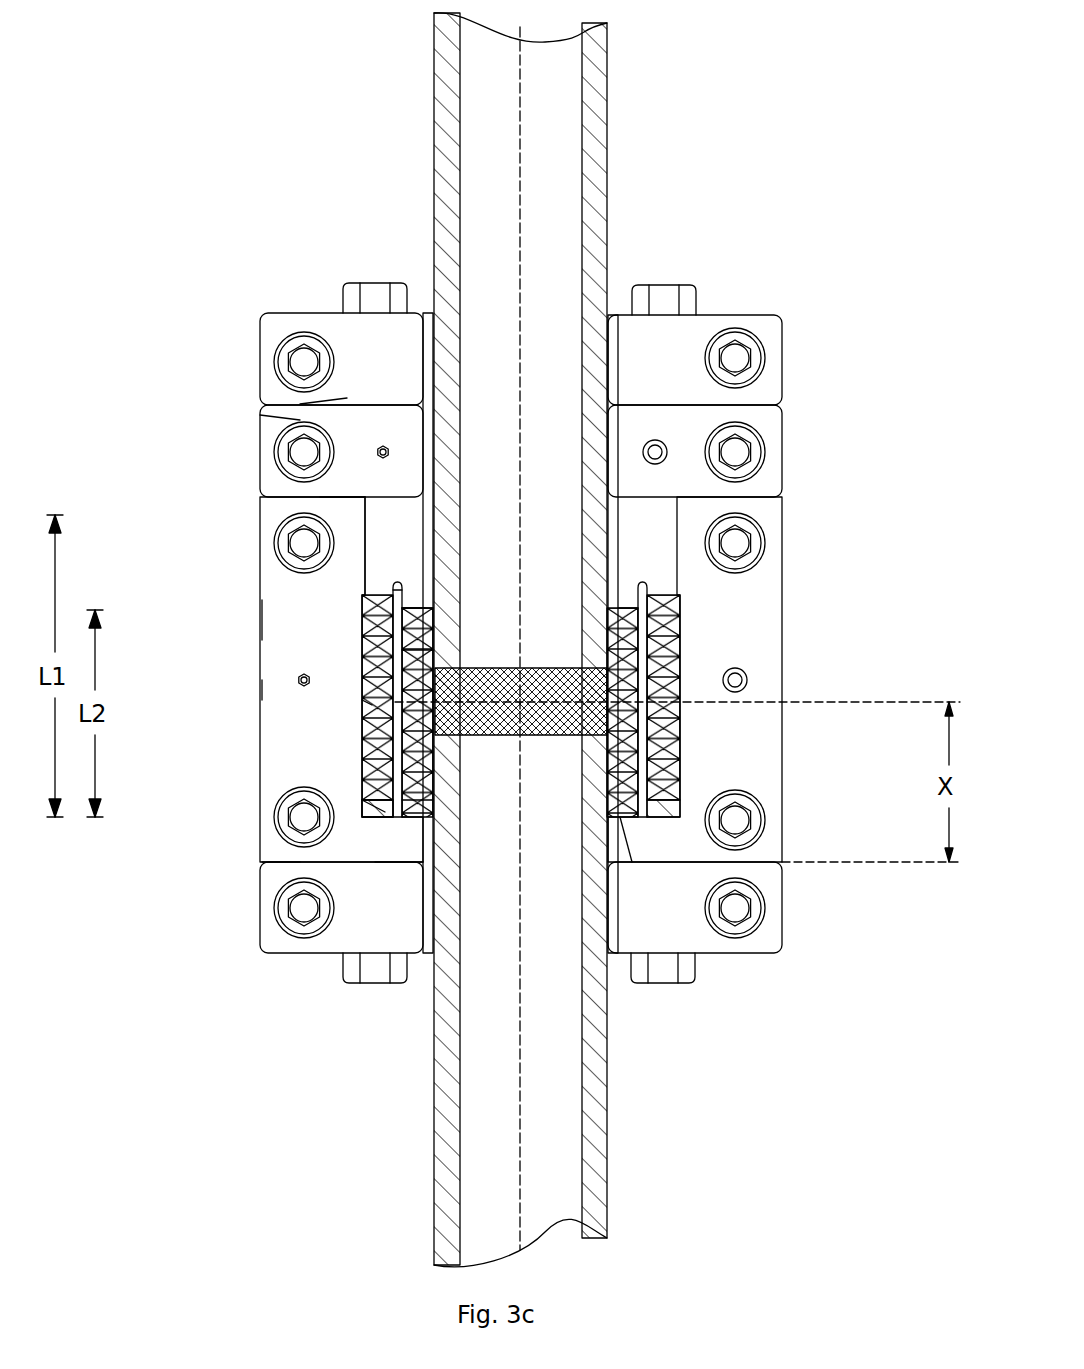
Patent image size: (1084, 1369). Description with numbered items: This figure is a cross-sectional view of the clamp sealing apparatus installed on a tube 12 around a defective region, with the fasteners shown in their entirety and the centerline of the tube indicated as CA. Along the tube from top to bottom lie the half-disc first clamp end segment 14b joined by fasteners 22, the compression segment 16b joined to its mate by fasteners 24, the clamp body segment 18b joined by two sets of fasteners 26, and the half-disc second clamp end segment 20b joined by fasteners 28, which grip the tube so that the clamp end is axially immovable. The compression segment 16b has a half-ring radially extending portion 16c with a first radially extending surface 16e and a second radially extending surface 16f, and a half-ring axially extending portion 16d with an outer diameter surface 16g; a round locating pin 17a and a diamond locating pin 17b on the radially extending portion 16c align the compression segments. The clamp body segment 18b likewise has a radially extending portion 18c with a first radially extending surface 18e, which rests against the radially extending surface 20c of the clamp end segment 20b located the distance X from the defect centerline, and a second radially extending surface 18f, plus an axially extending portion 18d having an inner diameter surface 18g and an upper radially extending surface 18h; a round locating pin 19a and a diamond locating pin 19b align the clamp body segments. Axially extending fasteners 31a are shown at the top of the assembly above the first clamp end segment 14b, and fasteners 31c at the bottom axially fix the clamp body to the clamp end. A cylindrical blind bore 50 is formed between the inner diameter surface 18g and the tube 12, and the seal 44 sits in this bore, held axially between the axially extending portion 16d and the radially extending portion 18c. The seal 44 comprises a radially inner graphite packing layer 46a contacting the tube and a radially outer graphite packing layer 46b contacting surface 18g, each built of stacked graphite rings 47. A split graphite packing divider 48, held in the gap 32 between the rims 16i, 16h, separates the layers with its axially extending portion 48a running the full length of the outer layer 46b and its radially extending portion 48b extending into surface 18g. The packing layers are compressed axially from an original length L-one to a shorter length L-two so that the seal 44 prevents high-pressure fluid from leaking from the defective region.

The tube 12 is at (606, 125).
The central axis CA is at (519, 130).
The first clamp end segment 14b is at (262, 331).
The compression segment 16b is at (275, 462).
The radially extending portion 16c is at (340, 437).
The axially extending portion 16d is at (410, 557).
The first radially extending surface 16e is at (347, 398).
The second radially extending surface 16f is at (328, 495).
The outer diameter surface of axially extending portion 16g is at (365, 540).
The rim 16h is at (392, 585).
The rim 16i is at (418, 640).
The round locating pin 17a is at (658, 442).
The diamond locating pin 17b is at (381, 444).
The clamp body segment 18b is at (272, 690).
The radially extending portion 18c is at (348, 850).
The axially extending portion 18d is at (302, 633).
The first radially extending surface 18e is at (296, 864).
The second radially extending surface 18f is at (385, 810).
The inner diameter surface of axially extending portion 18g is at (372, 705).
The radially extending surface 18h is at (300, 498).
The round locating pin 19a is at (750, 680).
The diamond locating pin 19b is at (298, 672).
The second clamp end segment 20b is at (265, 903).
The radially extending surface 20c is at (375, 862).
The fasteners 22 is at (740, 358).
The fasteners 24 is at (737, 452).
The fasteners 26 is at (668, 618).
The fasteners 28 is at (747, 937).
The upper nut 31a is at (372, 283).
The fasteners 31c is at (363, 984).
The gap 32 is at (410, 576).
The seal 44 is at (447, 811).
The radially inner graphite packing layer 46a is at (427, 753).
The radially outer graphite packing layer 46b is at (395, 735).
The graphite rings 47 is at (624, 618).
The split graphite packing divider 48 is at (385, 830).
The axially extending portion 48a is at (400, 653).
The radially extending portion 48b is at (400, 800).
The cylindrical blind bore 50 is at (625, 823).